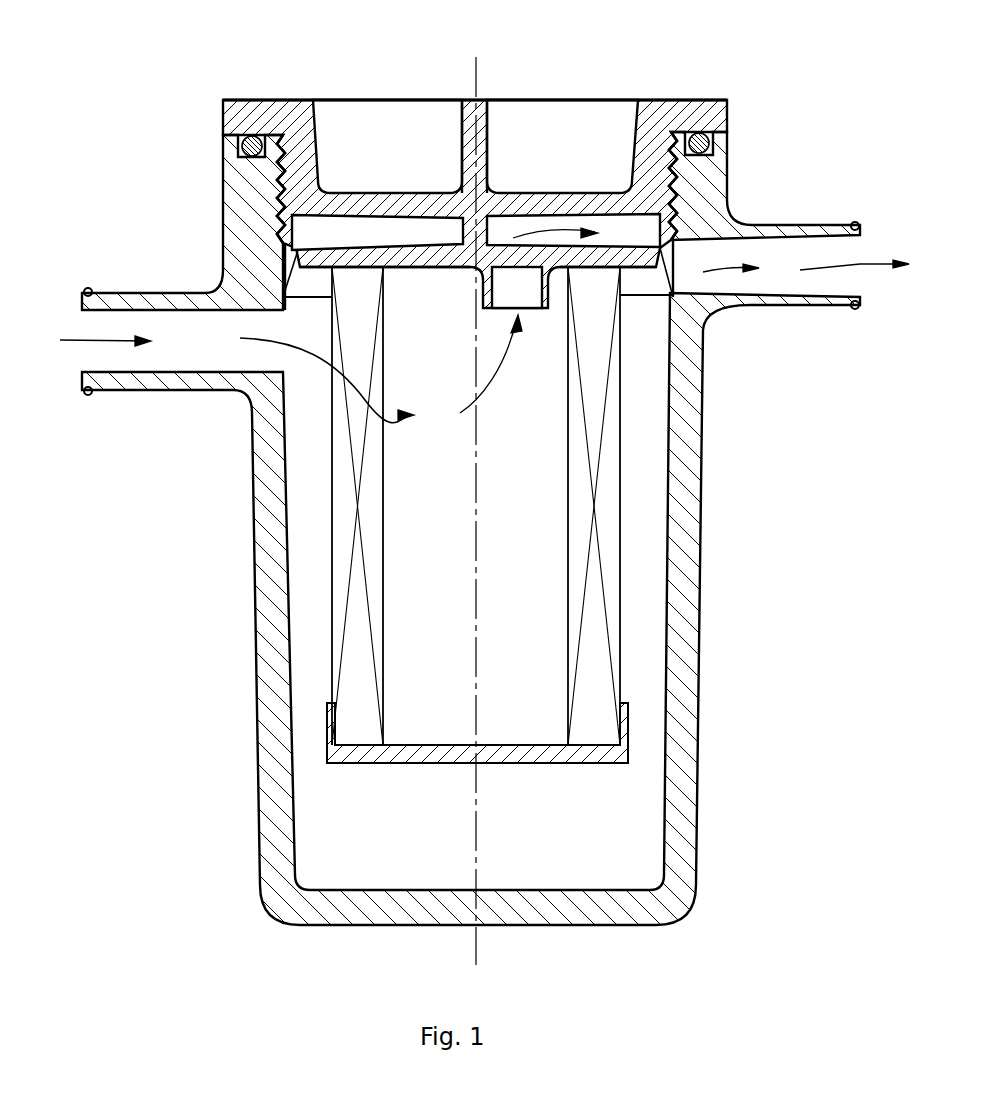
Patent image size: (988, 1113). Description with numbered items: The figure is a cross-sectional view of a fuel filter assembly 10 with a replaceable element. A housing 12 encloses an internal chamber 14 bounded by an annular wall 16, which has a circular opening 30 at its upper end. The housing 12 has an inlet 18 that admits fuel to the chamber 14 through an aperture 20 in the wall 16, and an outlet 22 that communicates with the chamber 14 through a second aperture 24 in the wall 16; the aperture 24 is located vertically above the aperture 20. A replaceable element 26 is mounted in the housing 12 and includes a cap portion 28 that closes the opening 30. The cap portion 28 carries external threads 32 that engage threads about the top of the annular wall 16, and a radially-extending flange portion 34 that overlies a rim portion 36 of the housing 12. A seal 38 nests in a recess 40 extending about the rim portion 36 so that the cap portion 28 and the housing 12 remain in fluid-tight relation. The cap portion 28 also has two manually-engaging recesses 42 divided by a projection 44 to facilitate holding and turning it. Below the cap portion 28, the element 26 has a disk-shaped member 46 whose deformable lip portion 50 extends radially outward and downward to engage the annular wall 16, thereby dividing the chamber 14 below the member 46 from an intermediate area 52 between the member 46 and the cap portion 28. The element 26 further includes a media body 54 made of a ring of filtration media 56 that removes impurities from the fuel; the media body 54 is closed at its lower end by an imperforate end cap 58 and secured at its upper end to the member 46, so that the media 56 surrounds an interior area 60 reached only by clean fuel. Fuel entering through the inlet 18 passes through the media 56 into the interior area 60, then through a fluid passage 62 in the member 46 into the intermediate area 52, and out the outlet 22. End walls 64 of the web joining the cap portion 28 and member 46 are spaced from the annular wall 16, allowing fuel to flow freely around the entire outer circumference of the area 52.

The fuel filter assembly 10 is at (722, 672).
The housing 12 is at (257, 662).
The internal chamber 14 is at (565, 839).
The annular wall 16 is at (683, 607).
The inlet 18 is at (123, 393).
The aperture 20 is at (280, 360).
The outlet 22 is at (793, 307).
The second aperture 24 is at (740, 307).
The replaceable element 26 is at (583, 92).
The cap portion 28 is at (557, 130).
The circular opening 30 is at (278, 172).
The external threads 32 is at (670, 190).
The flange portion 34 is at (707, 100).
The rim portion 36 is at (727, 143).
The seal 38 is at (243, 147).
The recess 40 is at (246, 157).
The manually-engaging recesses 42 is at (370, 147).
The projection 44 is at (462, 125).
The disk-shaped member 46 is at (440, 267).
The lip portion 50 is at (642, 292).
The intermediate area 52 is at (318, 243).
The media body 54 is at (612, 564).
The filtration media 56 is at (577, 632).
The end cap 58 is at (413, 763).
The interior area 60 is at (445, 514).
The fluid passage 62 is at (528, 300).
The end walls 64 is at (640, 240).